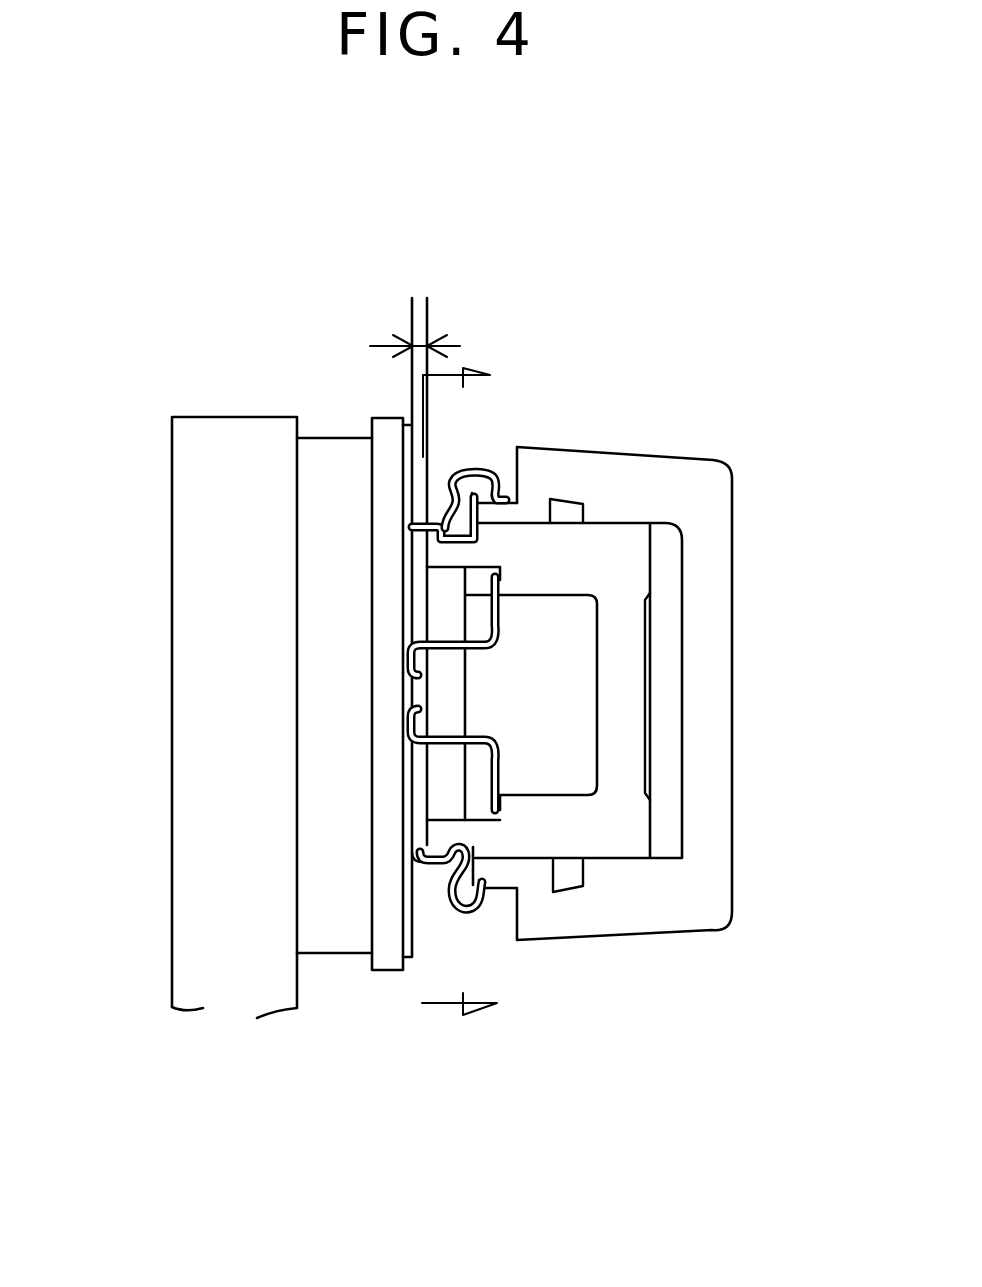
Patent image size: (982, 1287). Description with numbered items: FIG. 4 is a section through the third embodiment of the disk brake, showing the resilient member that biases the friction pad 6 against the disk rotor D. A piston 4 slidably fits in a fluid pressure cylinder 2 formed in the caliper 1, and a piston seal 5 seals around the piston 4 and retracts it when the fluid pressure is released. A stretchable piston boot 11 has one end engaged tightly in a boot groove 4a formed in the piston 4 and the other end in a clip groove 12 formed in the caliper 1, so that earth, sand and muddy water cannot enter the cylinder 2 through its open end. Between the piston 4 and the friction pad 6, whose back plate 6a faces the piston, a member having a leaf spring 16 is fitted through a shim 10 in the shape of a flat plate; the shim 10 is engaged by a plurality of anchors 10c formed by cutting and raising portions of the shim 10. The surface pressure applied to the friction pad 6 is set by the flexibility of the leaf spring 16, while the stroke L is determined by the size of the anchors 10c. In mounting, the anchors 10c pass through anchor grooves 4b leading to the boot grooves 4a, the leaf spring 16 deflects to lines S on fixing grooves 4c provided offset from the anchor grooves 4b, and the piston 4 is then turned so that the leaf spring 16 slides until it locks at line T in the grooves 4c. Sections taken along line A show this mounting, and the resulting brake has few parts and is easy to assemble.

The caliper 1 is at (722, 732).
The fluid pressure cylinder 2 is at (662, 525).
The piston 4 is at (620, 688).
The boot groove 4a is at (463, 847).
The anchor groove 4b is at (440, 848).
The fixing groove 4c is at (478, 807).
The piston seal 5 is at (570, 512).
The friction pad 6 is at (340, 461).
The front plate 6a is at (392, 938).
The shim 10 is at (412, 496).
The anchor 10c is at (452, 492).
The piston boot 11 is at (477, 907).
The clip groove 12 is at (498, 490).
The leaf spring 16 is at (500, 741).
The disk rotor D is at (212, 487).
The stroke L is at (438, 340).
The line A- A is at (470, 692).
The lines S is at (465, 612).
The line T is at (500, 577).